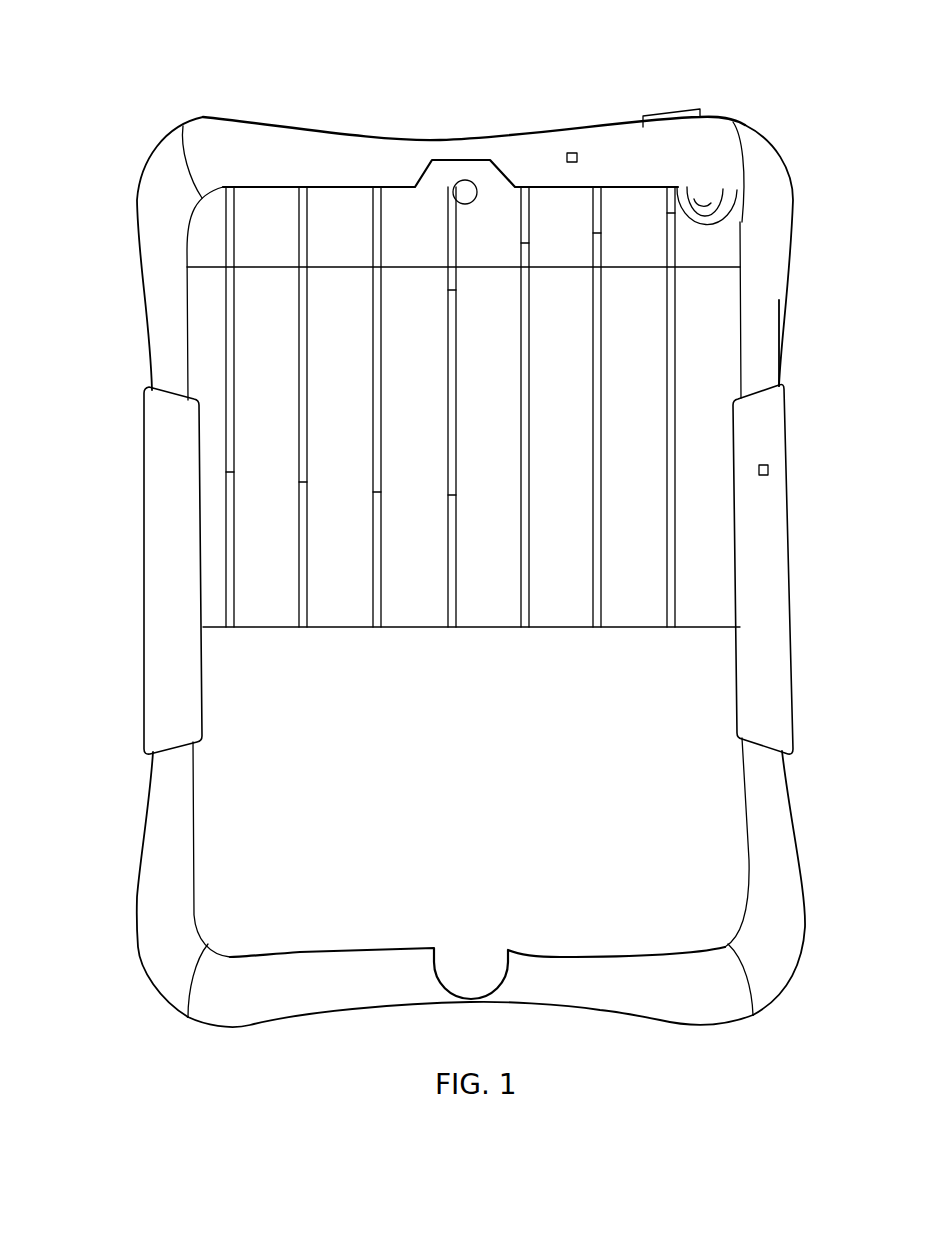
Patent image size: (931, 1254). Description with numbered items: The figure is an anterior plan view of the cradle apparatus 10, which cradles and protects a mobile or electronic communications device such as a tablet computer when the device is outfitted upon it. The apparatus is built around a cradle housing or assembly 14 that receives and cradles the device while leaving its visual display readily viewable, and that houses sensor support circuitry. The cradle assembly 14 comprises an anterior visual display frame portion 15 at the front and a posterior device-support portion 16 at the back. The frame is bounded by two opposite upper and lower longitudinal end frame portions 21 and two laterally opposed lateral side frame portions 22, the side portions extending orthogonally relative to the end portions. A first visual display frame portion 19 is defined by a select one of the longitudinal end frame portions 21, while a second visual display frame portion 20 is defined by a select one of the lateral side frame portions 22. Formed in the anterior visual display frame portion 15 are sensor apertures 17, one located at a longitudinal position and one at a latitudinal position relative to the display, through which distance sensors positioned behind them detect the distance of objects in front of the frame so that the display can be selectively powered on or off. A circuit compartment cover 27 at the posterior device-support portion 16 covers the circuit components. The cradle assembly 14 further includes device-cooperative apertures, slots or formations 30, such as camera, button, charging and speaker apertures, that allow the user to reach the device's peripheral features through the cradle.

The cradle apparatus 10 is at (745, 100).
The cradle housing or assembly 14 is at (782, 160).
The anterior visual display frame portion 15 is at (162, 175).
The posterior device-support portion 16 is at (597, 892).
The sensor aperture 17 is at (567, 157).
The first visual display frame portion 19 is at (618, 141).
The second visual display frame portion 20 is at (770, 362).
The longitudinal end frame portion 21 is at (278, 144).
The lateral side frame portion 22 is at (760, 557).
The circuit compartment cover 27 is at (471, 675).
The device-cooperative apertures, slots or formations 30 is at (466, 191).